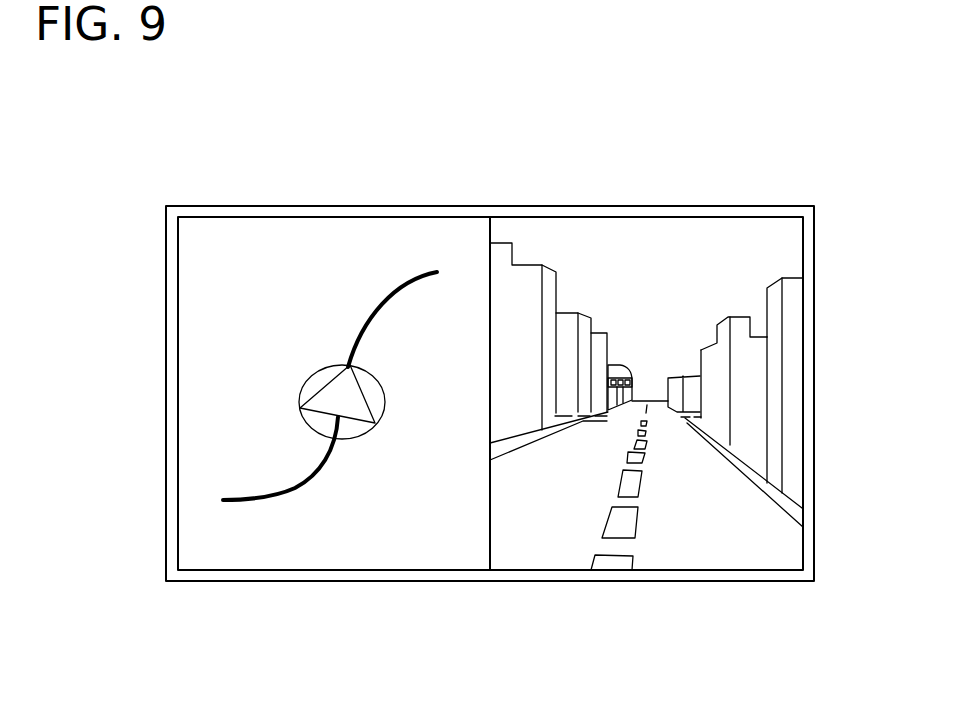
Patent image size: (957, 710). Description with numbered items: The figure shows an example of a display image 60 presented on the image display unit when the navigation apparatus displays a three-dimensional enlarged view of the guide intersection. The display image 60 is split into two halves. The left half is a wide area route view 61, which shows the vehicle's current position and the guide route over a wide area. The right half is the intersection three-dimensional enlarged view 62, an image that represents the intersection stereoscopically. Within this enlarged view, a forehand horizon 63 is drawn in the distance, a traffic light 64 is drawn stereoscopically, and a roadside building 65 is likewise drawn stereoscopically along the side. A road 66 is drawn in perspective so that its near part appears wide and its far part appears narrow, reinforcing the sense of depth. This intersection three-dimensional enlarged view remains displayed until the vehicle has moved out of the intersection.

The display image 60 is at (382, 207).
The wide area route view 61 is at (220, 243).
The intersection 3D enlarged view 62 is at (683, 360).
The forehand horizon 63 is at (657, 403).
The stereoscopically-drawn traffic light 64 is at (628, 373).
The stereoscopically-drawn roadside building 65 is at (755, 418).
The road 66 is at (710, 500).